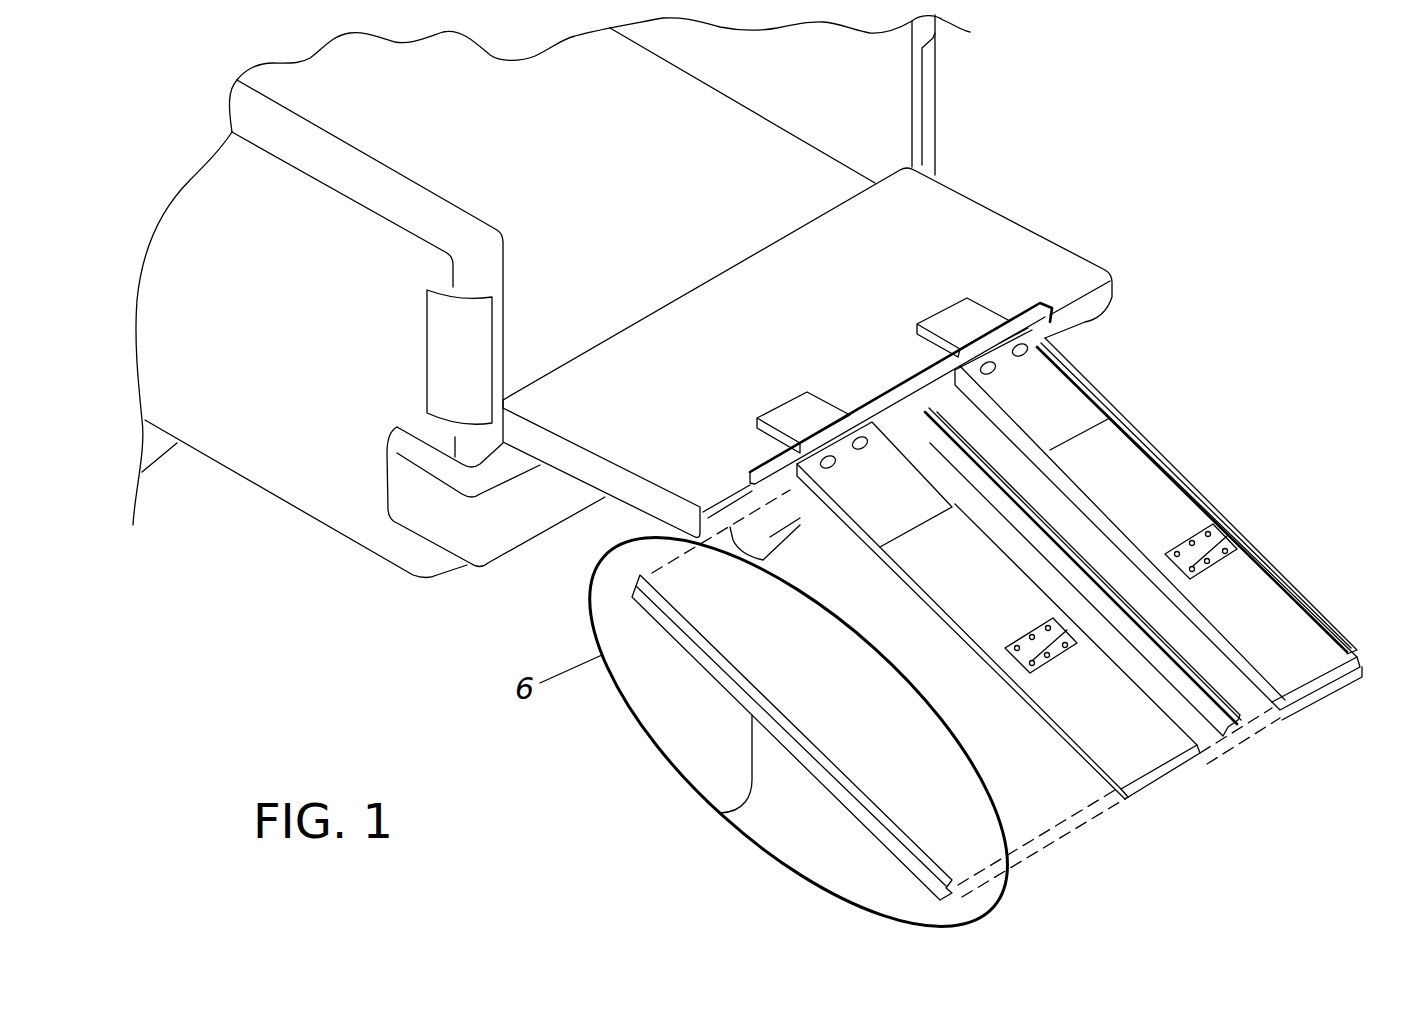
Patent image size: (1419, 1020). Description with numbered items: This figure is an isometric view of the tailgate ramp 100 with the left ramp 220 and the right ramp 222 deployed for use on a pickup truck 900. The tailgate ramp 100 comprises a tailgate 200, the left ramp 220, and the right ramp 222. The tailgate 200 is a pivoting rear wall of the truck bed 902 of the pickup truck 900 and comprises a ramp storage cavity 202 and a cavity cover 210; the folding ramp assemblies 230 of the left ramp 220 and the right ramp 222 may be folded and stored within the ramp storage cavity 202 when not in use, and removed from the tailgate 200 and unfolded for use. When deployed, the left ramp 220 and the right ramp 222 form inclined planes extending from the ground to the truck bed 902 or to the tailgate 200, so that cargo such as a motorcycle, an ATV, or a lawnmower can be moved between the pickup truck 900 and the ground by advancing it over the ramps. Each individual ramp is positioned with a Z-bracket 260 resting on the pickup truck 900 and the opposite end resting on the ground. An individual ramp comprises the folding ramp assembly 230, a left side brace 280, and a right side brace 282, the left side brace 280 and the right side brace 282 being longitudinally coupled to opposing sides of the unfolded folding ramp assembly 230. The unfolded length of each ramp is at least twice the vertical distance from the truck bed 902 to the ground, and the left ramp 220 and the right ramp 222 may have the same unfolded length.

The tailgate ramp 100 is at (983, 498).
The tailgate 200 is at (983, 523).
The ramp storage cavity 202 is at (1040, 327).
The cavity cover 210 is at (805, 532).
The left ramp 220 is at (985, 925).
The right ramp 222 is at (1368, 665).
The folding ramp assembly 230 is at (1170, 502).
The Z-bracket 260 is at (800, 415).
The left side brace 280 is at (1103, 498).
The right side brace 282 is at (1253, 552).
The pickup truck 900 is at (287, 460).
The truck bed 902 is at (583, 150).